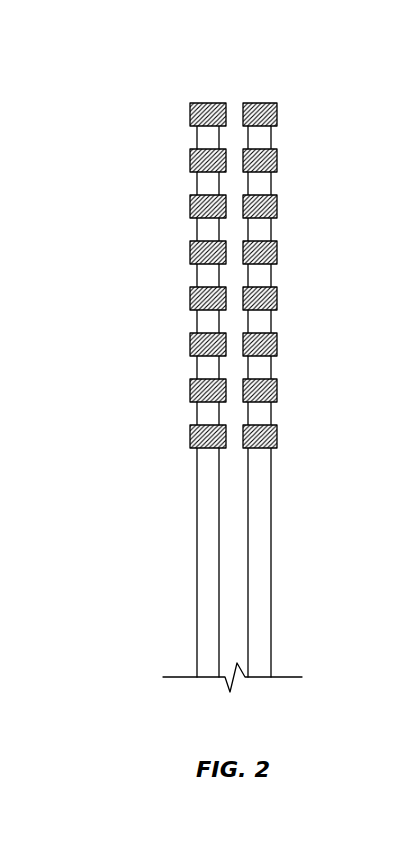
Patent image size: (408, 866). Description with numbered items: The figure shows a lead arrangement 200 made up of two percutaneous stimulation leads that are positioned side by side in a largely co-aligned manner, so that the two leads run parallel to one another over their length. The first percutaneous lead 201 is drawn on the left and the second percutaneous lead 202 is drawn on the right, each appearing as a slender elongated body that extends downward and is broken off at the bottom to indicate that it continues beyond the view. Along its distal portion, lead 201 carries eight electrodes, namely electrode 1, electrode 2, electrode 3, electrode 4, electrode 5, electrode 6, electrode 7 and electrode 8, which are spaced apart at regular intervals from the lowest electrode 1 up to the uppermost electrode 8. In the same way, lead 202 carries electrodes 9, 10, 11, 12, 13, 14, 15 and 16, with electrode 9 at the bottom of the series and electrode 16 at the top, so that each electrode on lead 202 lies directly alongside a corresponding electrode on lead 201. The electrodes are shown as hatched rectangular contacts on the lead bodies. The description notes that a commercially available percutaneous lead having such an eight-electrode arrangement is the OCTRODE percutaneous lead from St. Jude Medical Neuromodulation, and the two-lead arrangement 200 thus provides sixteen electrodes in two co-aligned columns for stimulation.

The lead arrangement 200 is at (117, 58).
The percutaneous lead 201 is at (197, 563).
The percutaneous lead 202 is at (271, 563).
The electrode 1 is at (190, 438).
The electrode 2 is at (190, 392).
The electrode 3 is at (190, 346).
The electrode 4 is at (190, 300).
The electrode 5 is at (190, 254).
The electrode 6 is at (190, 208).
The electrode 7 is at (190, 162).
The electrode 8 is at (190, 116).
The electrode 9 is at (277, 438).
The electrode 10 is at (277, 392).
The electrode 11 is at (277, 346).
The electrode 12 is at (277, 300).
The electrode 13 is at (277, 254).
The electrode 14 is at (277, 208).
The electrode 15 is at (277, 162).
The electrode 16 is at (277, 116).